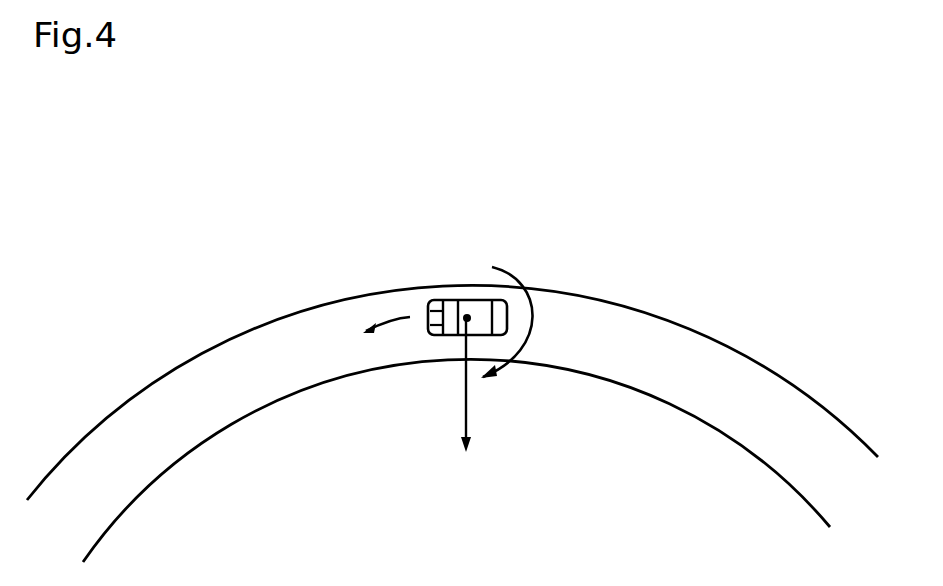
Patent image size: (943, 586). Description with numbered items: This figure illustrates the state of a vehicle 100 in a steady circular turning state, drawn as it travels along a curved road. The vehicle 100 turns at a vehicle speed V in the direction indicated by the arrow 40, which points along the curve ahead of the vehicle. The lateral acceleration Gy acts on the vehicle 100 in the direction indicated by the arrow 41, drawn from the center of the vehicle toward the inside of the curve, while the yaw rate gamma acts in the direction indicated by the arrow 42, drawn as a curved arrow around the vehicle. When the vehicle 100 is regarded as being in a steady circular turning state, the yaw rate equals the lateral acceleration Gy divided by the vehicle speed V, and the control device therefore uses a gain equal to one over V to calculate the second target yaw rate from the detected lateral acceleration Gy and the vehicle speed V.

The vehicle 100 is at (470, 300).
The arrow 40 is at (395, 318).
The arrow 41 is at (466, 397).
The arrow 42 is at (533, 316).